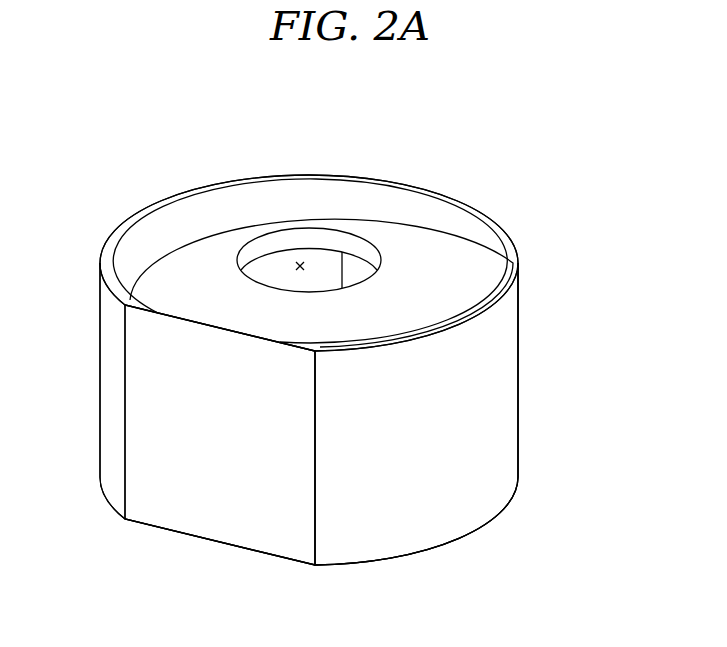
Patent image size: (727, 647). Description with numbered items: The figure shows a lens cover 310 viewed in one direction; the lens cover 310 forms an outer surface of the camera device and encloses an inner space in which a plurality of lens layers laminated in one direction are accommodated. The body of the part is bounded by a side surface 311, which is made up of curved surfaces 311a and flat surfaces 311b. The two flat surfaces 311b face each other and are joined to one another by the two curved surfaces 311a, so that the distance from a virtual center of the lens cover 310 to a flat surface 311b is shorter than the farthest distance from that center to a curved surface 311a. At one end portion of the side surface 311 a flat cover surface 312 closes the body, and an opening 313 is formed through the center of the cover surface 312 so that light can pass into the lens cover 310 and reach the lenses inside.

The lens cover 310 is at (468, 186).
The side surface 311 is at (465, 459).
The curved surface 311a is at (519, 414).
The flat surface 311b is at (202, 490).
The cover surface 312 is at (183, 238).
The opening 313 is at (299, 260).